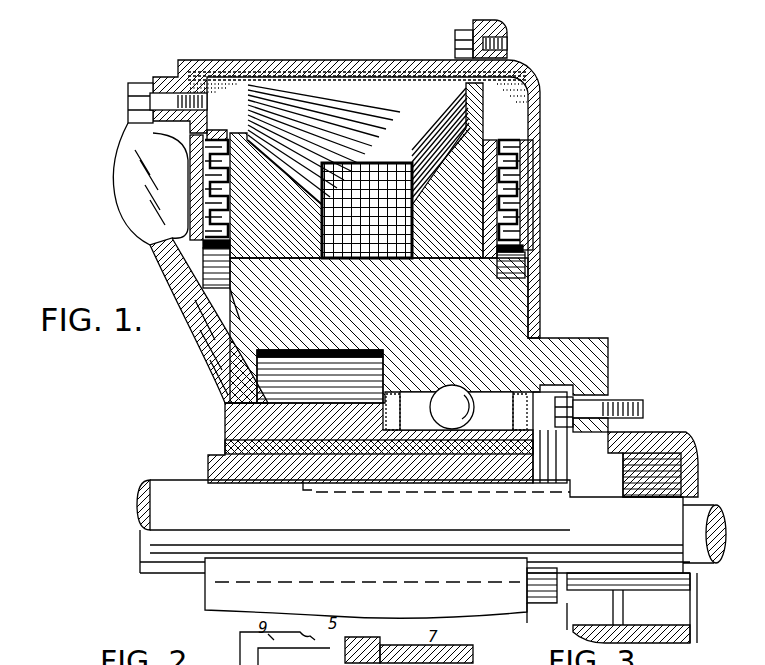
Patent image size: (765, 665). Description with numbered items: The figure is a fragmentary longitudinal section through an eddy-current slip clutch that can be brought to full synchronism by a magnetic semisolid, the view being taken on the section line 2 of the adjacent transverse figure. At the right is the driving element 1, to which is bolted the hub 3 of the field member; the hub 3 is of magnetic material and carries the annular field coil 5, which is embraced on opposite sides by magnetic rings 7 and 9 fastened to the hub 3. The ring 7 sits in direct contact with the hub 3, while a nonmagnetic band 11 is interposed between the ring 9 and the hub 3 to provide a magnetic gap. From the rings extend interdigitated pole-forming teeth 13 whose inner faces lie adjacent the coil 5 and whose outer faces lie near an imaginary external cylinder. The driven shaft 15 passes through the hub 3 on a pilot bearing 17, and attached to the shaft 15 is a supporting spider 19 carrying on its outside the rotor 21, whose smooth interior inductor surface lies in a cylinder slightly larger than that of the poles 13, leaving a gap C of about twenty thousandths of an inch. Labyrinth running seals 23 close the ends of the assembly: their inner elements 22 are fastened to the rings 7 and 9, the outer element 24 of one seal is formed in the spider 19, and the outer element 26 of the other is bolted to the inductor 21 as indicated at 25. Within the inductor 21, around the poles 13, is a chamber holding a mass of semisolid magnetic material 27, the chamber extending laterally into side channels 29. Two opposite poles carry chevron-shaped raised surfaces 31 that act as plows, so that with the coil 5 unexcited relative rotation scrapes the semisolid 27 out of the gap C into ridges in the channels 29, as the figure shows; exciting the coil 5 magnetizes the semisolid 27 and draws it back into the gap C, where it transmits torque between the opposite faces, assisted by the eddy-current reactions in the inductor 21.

The driving element 1 is at (655, 436).
The section line 2- 2 is at (178, 70).
The hub 3 is at (446, 20).
The annular field coil 5 is at (366, 244).
The magnetic ring 7 is at (430, 247).
The magnetic ring 9 is at (279, 252).
The nonmagnetic band 11 is at (302, 258).
The pole-forming teeth 13 is at (280, 102).
The driven shaft 15 is at (240, 512).
The pilot bearing 17 is at (478, 410).
The supporting spider 19 is at (228, 370).
The rotor 21 is at (321, 63).
The inner seal element 22 is at (240, 188).
The labyrinth running seal 23 is at (212, 213).
The outer seal element 24 is at (198, 174).
The bolt 25 is at (523, 66).
The outer seal element 26 is at (523, 173).
The semisolid magnetic material 27 is at (234, 72).
The side channels 29 is at (190, 145).
The chevron-shaped raised surface 31 is at (356, 62).
The gap C is at (408, 103).